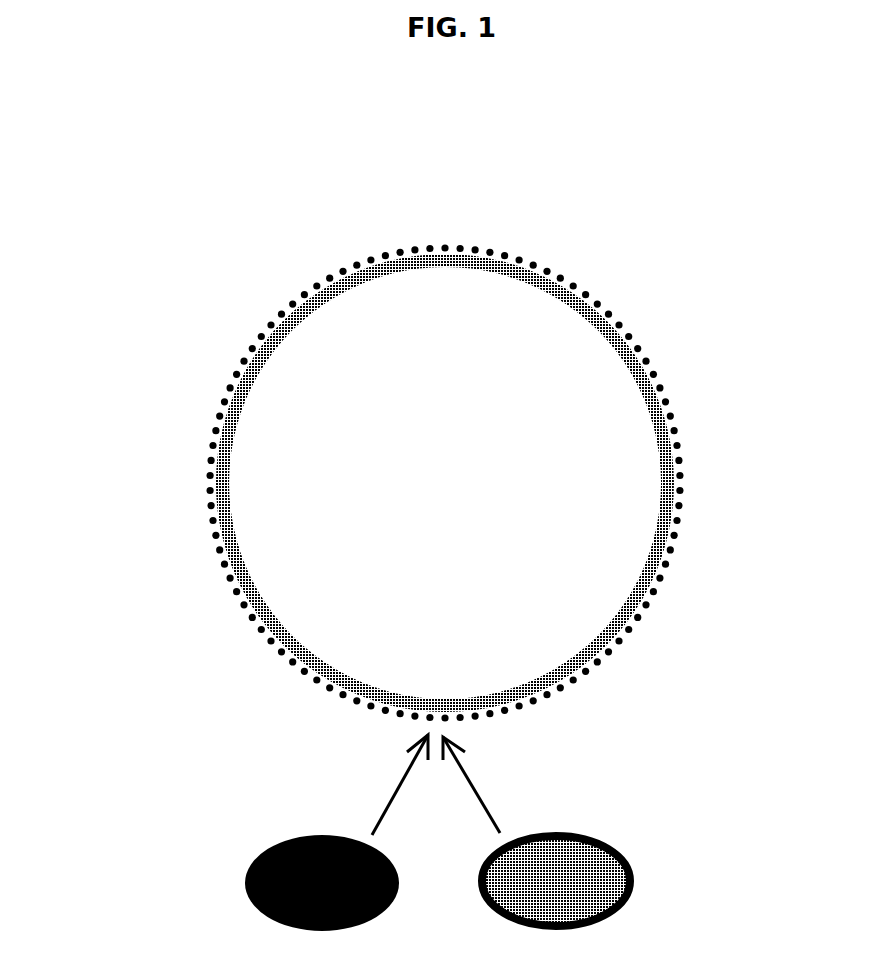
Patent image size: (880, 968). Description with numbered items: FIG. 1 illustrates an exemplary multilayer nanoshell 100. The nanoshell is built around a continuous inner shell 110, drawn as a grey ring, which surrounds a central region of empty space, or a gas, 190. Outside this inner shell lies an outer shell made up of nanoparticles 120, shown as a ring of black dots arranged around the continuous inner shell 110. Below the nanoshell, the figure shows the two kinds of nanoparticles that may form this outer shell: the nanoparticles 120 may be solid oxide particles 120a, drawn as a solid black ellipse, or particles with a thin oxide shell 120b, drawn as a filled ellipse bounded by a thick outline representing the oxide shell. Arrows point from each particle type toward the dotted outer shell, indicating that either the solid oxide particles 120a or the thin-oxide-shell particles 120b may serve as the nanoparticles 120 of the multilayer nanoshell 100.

The multilayer nanoshell 100 is at (110, 143).
The continuous inner shell 110 is at (582, 309).
The nanoparticles 120 is at (592, 295).
The empty space 190 is at (472, 494).
The solid oxide particles 120a is at (240, 883).
The particles with a thin oxide shell 120b is at (633, 880).